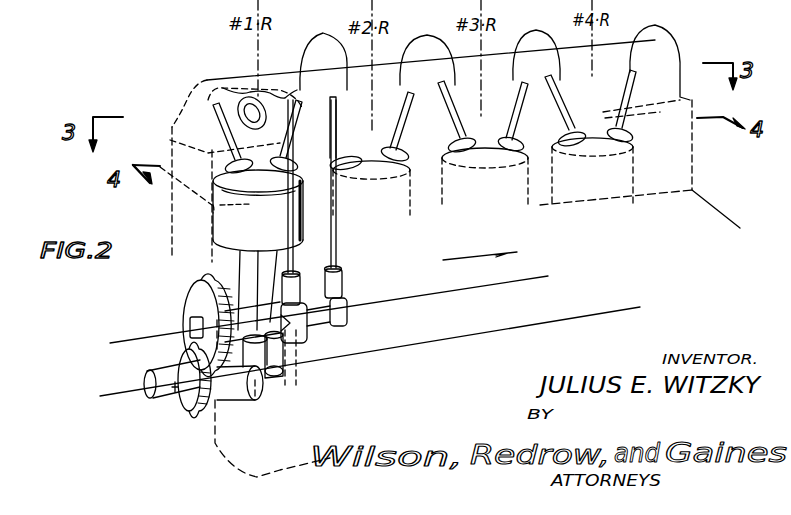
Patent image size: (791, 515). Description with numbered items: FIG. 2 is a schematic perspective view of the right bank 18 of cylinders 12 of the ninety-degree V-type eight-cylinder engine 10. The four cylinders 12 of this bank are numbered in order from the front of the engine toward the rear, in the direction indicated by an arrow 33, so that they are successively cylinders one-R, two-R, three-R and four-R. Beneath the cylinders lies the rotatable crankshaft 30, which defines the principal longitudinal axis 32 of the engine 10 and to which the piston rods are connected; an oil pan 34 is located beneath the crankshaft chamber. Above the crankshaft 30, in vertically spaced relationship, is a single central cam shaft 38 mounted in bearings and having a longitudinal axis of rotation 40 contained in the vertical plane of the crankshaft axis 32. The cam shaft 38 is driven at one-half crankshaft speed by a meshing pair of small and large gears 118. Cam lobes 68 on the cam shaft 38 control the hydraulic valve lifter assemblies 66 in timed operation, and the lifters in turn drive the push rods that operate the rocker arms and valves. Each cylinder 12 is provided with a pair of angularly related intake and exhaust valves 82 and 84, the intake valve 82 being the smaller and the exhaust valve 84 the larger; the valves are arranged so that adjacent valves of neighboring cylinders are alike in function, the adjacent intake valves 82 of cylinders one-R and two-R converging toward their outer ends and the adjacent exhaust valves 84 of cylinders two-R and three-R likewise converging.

The V-8 engine 10 is at (172, 211).
The cylinders 12 is at (303, 217).
The right bank 18 is at (172, 147).
The crankshaft 30 is at (228, 398).
The principal longitudinal axis 32 is at (104, 388).
The arrow 33 is at (480, 251).
The oil pan 34 is at (300, 430).
The cam shaft 38 is at (192, 327).
The longitudinal axis of rotation 40 is at (113, 342).
The hydraulic valve lifter assembly 66 is at (328, 285).
The cam lobe 68 is at (298, 322).
The intake valve 82 is at (428, 98).
The exhaust valve 84 is at (444, 97).
The small and large gears 118 is at (186, 297).